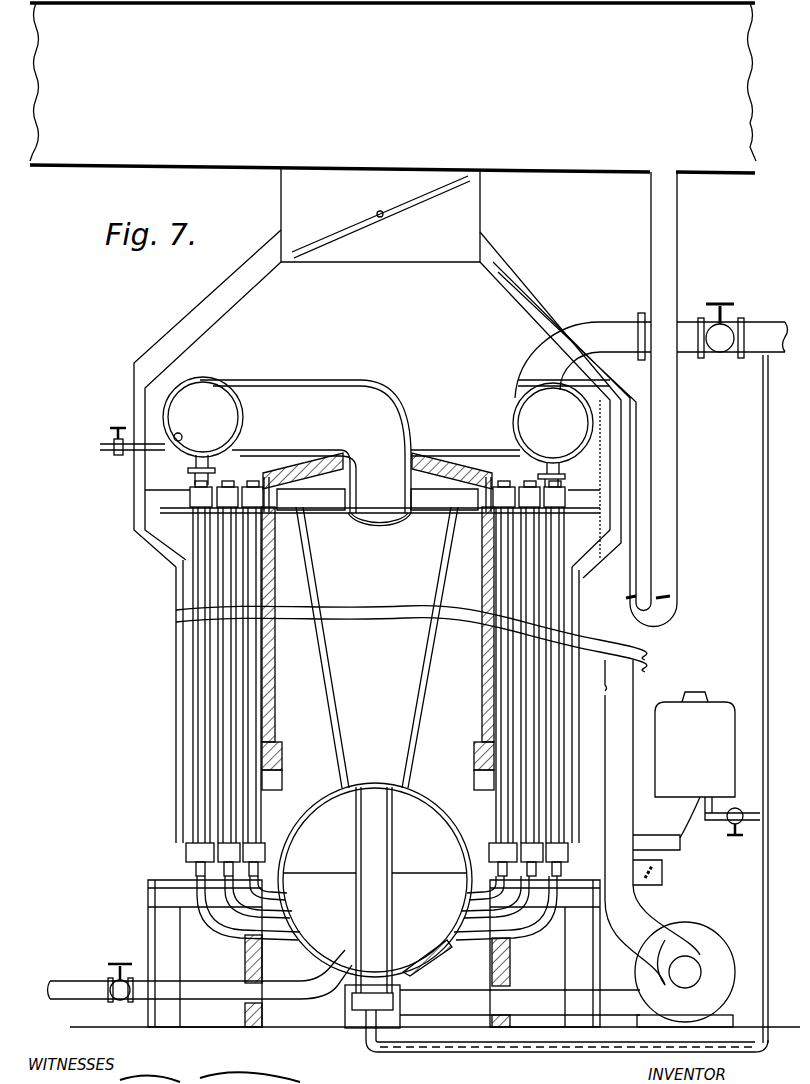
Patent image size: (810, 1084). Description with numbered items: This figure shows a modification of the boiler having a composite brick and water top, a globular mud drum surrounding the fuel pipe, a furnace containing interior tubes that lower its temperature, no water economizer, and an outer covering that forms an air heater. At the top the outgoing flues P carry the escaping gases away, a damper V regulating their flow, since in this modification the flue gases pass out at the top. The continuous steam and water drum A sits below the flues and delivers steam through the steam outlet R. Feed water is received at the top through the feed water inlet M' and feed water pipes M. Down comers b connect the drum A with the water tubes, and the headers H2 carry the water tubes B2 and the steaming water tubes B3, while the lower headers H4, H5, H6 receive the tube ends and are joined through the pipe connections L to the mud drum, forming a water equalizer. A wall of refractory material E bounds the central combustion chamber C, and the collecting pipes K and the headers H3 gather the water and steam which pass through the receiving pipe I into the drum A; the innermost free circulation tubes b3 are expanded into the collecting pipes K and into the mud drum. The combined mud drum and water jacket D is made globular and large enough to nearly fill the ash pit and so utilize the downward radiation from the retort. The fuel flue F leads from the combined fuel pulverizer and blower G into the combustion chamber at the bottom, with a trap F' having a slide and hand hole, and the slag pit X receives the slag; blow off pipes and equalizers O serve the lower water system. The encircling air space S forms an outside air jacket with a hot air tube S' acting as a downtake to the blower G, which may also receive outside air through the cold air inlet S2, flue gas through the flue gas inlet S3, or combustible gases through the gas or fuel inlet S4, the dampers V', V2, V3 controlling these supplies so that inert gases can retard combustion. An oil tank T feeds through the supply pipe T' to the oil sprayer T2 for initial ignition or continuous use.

The outgoing flue P is at (393, 258).
The damper V is at (381, 217).
The encircling air space S is at (409, 607).
The hot air tube S' is at (604, 444).
The flue gas inlet S3 is at (678, 445).
The steam outlet R is at (651, 351).
The steam and water drum A is at (386, 420).
The feed water pipe M is at (116, 463).
The feed water inlet M' is at (96, 441).
The receiving pipe I is at (375, 453).
The collecting pipe K is at (372, 483).
The down comer b is at (363, 471).
The header H2 is at (200, 495).
The water tube B2 is at (235, 550).
The steaming water tube B3 is at (265, 675).
The wall of refractory material E is at (277, 722).
The central combustion chamber C is at (377, 647).
The header H3 is at (255, 525).
The free circulation water tube b3 is at (300, 598).
The damper V' is at (686, 602).
The damper V2 is at (633, 600).
The damper V3 is at (650, 865).
The oil tank T is at (695, 744).
The gas or fuel inlet S4 is at (682, 840).
The cold air inlet S2 is at (664, 872).
The mud drum and water jacket D is at (375, 880).
The fuel flue F is at (498, 901).
The trap F' is at (352, 1006).
The oil sprayer T2 is at (362, 1032).
The supply pipe T' is at (567, 1061).
The header H4 is at (195, 845).
The header H5 is at (225, 852).
The header H6 is at (250, 860).
The pipe connection L is at (240, 918).
The slag pit X is at (374, 953).
The blow off pipe and equalizer O is at (187, 976).
The fuel pulverizer and blower G is at (685, 974).